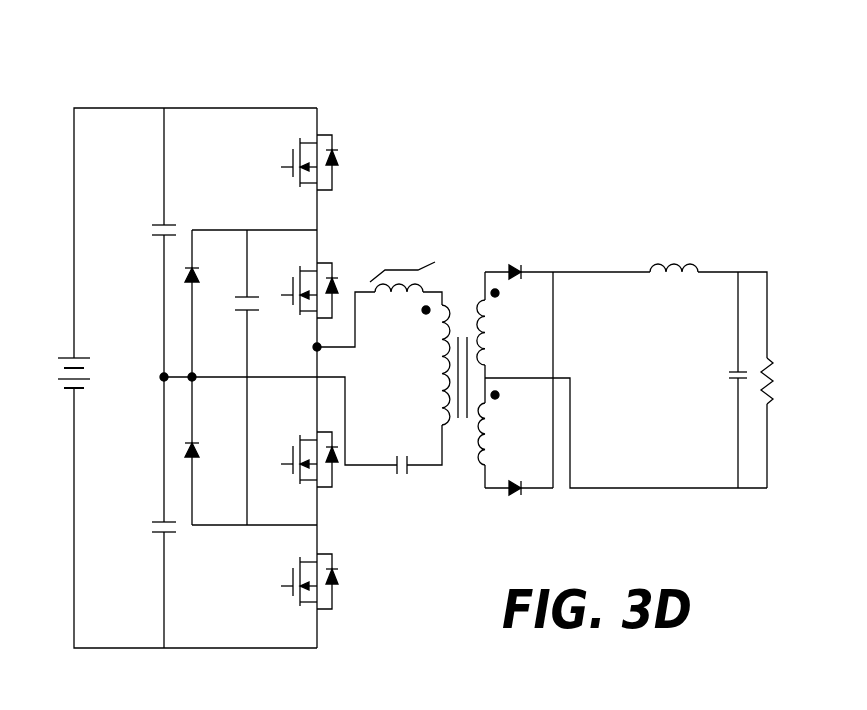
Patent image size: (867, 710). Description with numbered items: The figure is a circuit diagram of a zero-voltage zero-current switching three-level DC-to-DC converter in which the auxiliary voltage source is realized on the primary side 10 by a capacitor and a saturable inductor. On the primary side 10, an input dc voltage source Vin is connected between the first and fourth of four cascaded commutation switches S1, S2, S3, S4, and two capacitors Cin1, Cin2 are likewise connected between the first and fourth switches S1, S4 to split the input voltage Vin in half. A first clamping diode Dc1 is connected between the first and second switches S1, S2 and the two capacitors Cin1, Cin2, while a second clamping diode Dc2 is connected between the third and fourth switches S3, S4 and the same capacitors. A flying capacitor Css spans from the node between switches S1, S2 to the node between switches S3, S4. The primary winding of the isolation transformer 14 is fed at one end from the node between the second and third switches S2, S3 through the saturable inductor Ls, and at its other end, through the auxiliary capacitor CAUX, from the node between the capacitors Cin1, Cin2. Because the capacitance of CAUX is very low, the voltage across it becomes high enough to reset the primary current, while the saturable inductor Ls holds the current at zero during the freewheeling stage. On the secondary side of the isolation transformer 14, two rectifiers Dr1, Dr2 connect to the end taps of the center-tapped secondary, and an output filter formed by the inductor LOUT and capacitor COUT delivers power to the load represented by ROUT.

The primary side 10 is at (209, 93).
The isolation transformer 14 is at (559, 204).
The first commutation switch S1 is at (303, 162).
The second commutation switch S2 is at (303, 290).
The third commutation switch S3 is at (303, 459).
The fourth commutation switch S4 is at (303, 581).
The first input capacitor Cin1 is at (146, 216).
The second input capacitor Cin2 is at (146, 511).
The first clamping diode Dc1 is at (207, 261).
The second clamping diode Dc2 is at (207, 438).
The flying capacitor Css is at (260, 377).
The saturable inductor Ls is at (399, 307).
The auxiliary capacitor CAUX is at (398, 447).
The input dc voltage source Vin is at (61, 359).
The first rectifier Dr1 is at (520, 289).
The second rectifier Dr2 is at (520, 472).
The output inductor LOUT is at (674, 290).
The output capacitor COUT is at (712, 380).
The output load ROUT is at (794, 381).